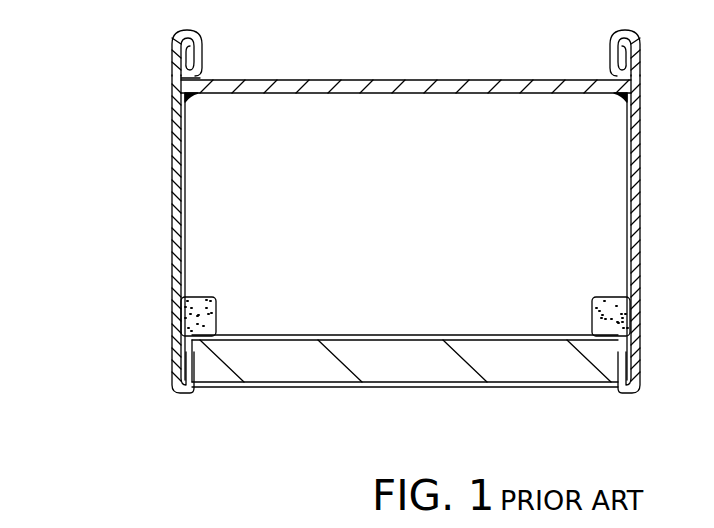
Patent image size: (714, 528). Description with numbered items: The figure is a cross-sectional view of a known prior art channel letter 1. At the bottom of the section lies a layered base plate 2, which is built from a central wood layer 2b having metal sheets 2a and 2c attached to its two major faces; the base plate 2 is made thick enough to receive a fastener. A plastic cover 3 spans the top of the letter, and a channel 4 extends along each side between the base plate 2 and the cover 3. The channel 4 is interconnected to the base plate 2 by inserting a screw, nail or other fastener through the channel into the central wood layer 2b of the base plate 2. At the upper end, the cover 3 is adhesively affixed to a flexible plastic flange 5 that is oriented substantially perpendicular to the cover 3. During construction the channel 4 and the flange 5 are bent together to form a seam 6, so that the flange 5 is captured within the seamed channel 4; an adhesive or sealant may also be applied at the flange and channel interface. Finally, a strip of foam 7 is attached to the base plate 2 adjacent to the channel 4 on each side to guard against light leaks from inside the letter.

The channel letter 1 is at (138, 260).
The layered base plate 2 is at (243, 385).
The metal sheet 2a is at (480, 390).
The central wood layer 2b is at (408, 367).
The metal sheet 2c is at (443, 338).
The plastic cover 3 is at (334, 80).
The channel 4 is at (173, 193).
The flexible plastic flange 5 is at (205, 78).
The seam 6 is at (194, 37).
The strip of foam 7 is at (200, 302).